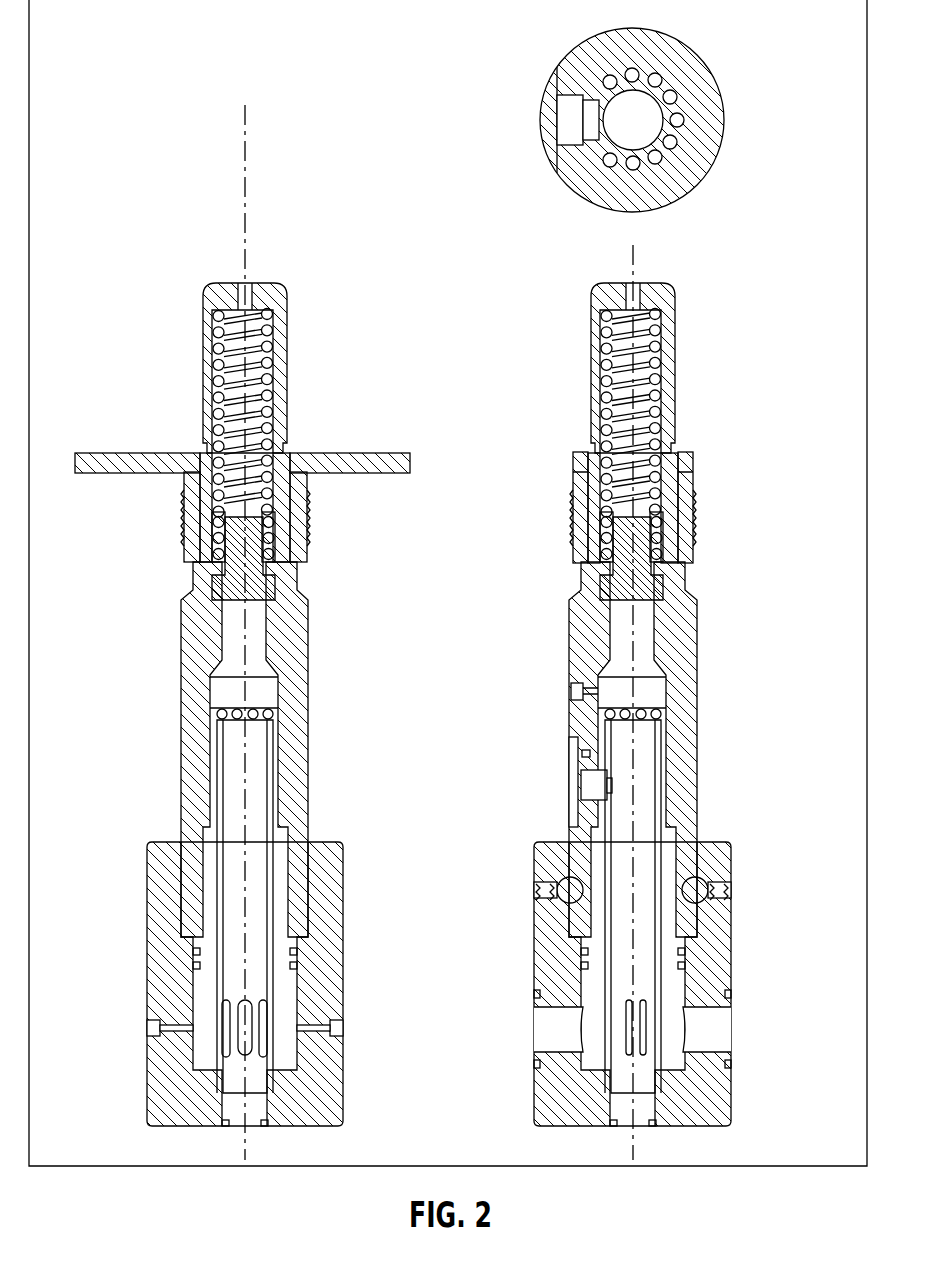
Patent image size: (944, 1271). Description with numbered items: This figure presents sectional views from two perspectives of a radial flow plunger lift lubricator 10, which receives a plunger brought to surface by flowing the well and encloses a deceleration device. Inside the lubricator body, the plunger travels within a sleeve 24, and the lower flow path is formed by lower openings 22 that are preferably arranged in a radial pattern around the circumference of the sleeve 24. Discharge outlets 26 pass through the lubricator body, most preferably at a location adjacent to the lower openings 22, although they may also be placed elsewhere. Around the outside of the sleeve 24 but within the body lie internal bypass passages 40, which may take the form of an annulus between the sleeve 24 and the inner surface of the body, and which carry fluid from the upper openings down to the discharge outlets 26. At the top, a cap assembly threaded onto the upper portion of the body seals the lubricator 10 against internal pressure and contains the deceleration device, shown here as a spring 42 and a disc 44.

The radial flow plunger lift lubricator 10 is at (327, 292).
The lower openings 22 is at (247, 1038).
The sleeve 24 is at (257, 902).
The discharge outlets 26 is at (558, 1030).
The internal bypass passages 40 is at (215, 780).
The spring 42 is at (262, 330).
The disc 44 is at (257, 577).